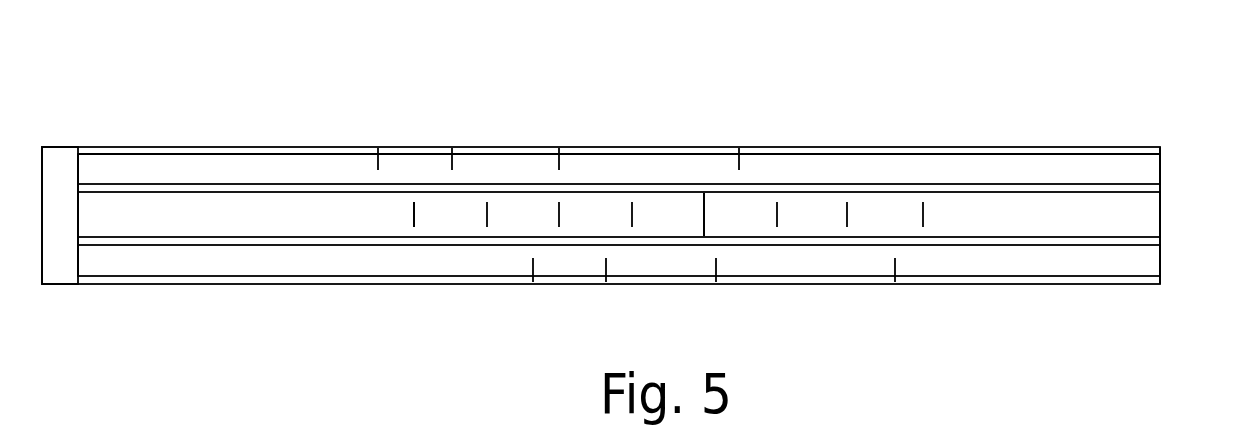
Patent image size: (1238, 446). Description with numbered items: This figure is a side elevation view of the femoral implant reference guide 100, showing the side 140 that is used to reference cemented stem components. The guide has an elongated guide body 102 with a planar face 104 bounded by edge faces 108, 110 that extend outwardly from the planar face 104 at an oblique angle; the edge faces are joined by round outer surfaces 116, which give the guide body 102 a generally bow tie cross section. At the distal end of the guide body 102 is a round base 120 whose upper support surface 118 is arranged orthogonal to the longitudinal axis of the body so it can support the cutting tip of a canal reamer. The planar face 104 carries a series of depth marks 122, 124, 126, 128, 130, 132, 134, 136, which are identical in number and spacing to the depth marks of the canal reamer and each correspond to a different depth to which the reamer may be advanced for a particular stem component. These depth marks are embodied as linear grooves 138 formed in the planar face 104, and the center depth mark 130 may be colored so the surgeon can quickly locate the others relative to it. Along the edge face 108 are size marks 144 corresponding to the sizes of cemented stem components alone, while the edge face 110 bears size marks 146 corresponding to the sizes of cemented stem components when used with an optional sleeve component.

The femoral implant reference guide 100 is at (1004, 91).
The guide body 102 is at (653, 165).
The planar face 104 is at (240, 196).
The edge face 108 is at (203, 163).
The edge face 110 is at (292, 265).
The round outer surface 116 is at (1142, 146).
The upper support surface 118 is at (80, 170).
The round base 120 is at (53, 148).
The depth mark 122 is at (410, 206).
The depth mark 124 is at (484, 206).
The depth mark 126 is at (552, 207).
The depth mark 128 is at (634, 206).
The depth mark 130 is at (704, 204).
The depth mark 132 is at (781, 207).
The depth mark 134 is at (851, 207).
The depth mark 136 is at (926, 207).
The linear groove 138 is at (415, 217).
The side 140 is at (1147, 213).
The size mark 144 is at (388, 160).
The size mark 146 is at (537, 278).